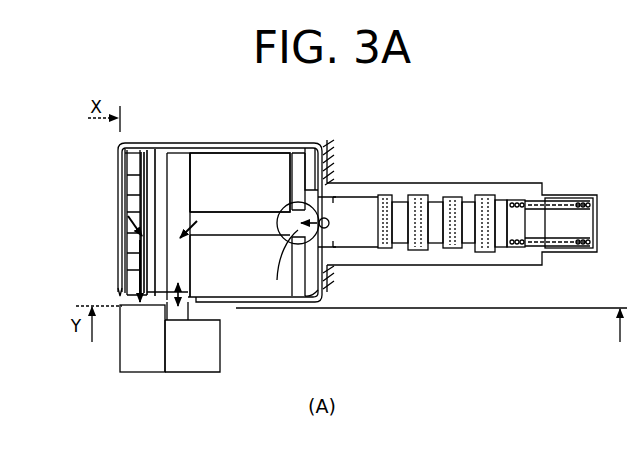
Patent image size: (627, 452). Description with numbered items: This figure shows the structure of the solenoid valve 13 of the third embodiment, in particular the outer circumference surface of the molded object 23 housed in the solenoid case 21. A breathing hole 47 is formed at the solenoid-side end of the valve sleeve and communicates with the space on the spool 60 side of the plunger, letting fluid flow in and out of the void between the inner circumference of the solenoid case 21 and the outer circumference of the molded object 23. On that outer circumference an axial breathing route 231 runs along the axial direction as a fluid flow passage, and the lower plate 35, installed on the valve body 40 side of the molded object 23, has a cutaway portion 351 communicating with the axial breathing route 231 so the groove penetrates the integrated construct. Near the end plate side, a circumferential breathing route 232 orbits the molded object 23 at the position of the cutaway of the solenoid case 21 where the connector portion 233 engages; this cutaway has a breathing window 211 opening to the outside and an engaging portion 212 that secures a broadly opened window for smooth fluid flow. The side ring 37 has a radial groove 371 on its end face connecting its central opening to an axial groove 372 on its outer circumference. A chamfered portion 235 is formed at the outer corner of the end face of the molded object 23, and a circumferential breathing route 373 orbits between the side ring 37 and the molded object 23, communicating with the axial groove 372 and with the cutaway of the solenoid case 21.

The solenoid valve 13 is at (483, 318).
The solenoid case 21 is at (298, 292).
The molded object 23 is at (245, 282).
The lower plate 35 is at (308, 299).
The side ring 37 is at (132, 178).
The valve body 40 is at (470, 187).
The breathing hole 47 is at (328, 227).
The spool 60 is at (493, 237).
The breathing window 211 is at (185, 307).
The engaging portion 212 is at (190, 307).
The axial breathing route 231 is at (243, 212).
The circumferential breathing route 232 is at (178, 168).
The connector portion 233 is at (138, 347).
The chamfered portion 235 is at (137, 154).
The cutaway portion 351 is at (277, 282).
The radial groove 371 is at (126, 196).
The axial groove 372 is at (143, 225).
The circumferential breathing route 373 is at (118, 264).